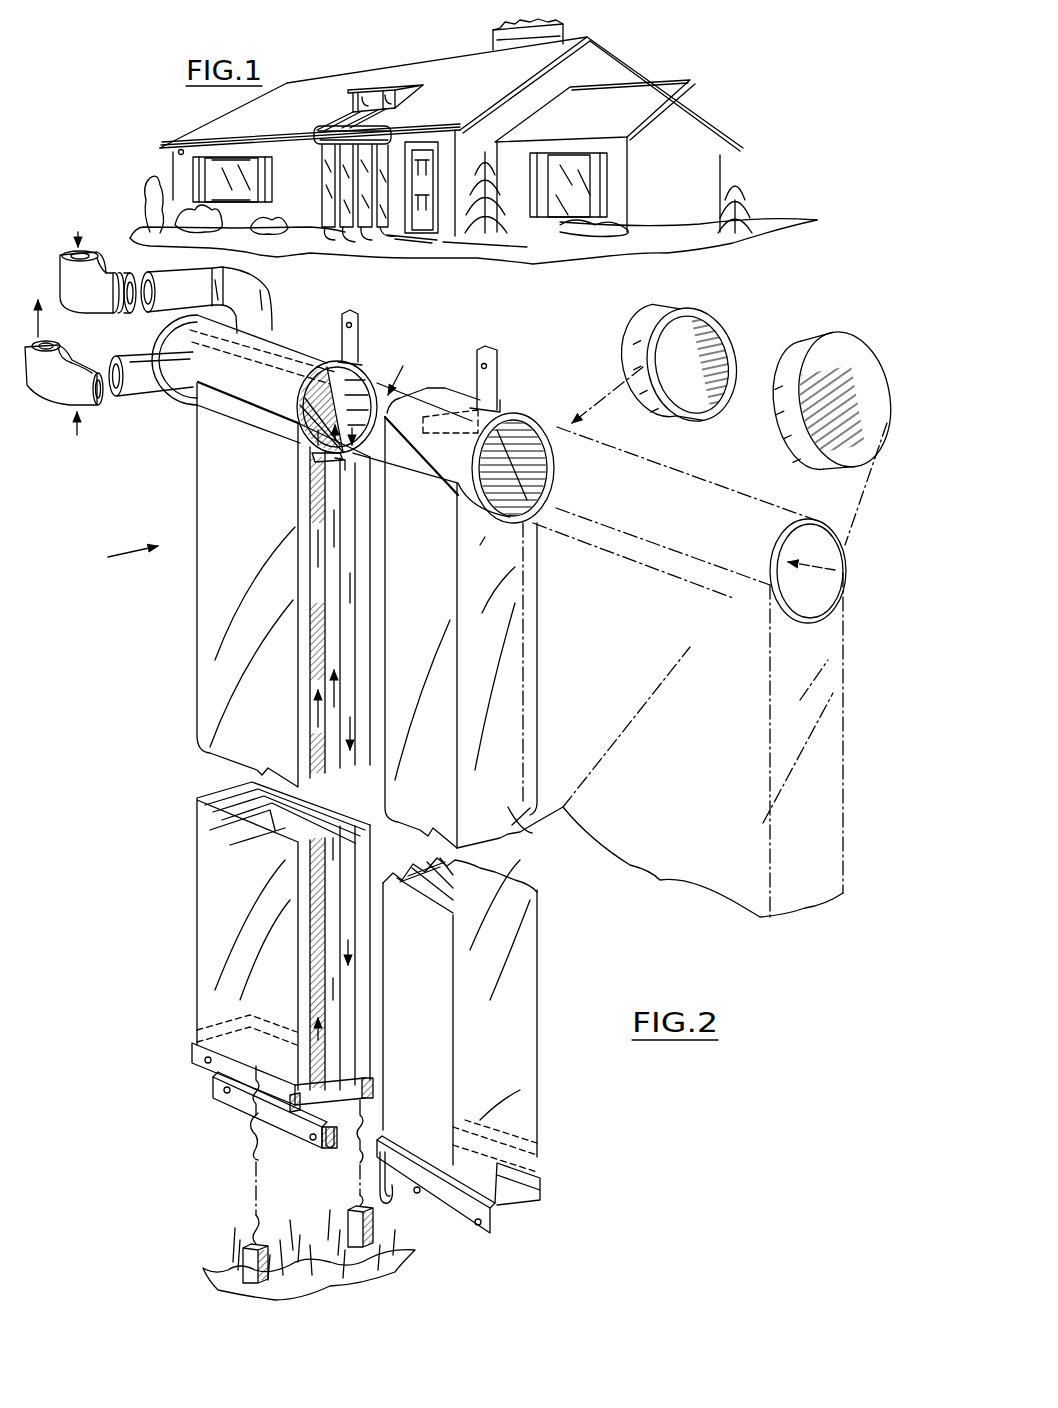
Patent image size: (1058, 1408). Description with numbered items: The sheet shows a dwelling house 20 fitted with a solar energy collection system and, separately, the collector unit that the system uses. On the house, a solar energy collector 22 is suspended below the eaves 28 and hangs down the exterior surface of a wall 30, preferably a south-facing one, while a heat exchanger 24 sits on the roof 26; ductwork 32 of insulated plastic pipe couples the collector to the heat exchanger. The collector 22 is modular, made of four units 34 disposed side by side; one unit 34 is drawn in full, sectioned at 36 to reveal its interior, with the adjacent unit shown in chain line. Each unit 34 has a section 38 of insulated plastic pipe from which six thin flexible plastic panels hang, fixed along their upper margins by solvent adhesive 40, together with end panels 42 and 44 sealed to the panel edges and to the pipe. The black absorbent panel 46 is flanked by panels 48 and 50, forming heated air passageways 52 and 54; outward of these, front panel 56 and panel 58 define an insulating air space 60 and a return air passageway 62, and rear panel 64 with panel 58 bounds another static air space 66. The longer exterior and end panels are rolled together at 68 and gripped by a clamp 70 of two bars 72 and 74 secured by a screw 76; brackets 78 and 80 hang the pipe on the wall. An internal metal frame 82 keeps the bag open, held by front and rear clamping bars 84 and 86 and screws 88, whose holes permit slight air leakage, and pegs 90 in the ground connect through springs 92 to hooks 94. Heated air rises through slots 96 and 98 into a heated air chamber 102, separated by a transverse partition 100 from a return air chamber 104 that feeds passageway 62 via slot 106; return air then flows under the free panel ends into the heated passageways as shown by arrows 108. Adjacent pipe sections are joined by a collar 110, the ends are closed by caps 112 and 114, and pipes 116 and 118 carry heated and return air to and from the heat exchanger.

In FIG. 1, the dwelling house 20 is at (465, 136).
In FIG. 1, the solar energy collector 22 is at (315, 175).
In FIG. 1, the heat exchanger 24 is at (373, 80).
In FIG. 1, the roof 26 is at (445, 97).
In FIG. 1, the eaves 28 is at (190, 148).
In FIG. 1, the wall 30 is at (182, 172).
In FIG. 1, the ductwork 32 is at (345, 108).
In FIG. 1, the collector unit 34 is at (345, 230).
In FIG. 2, the collector unit 34 is at (728, 443).
In FIG. 2, the section 36 is at (331, 416).
In FIG. 2, the pipe section 38 is at (450, 393).
In FIG. 2, the solvent adhesive 40 is at (230, 395).
In FIG. 2, the end panel 42 is at (232, 787).
In FIG. 2, the end panel 44 is at (520, 826).
In FIG. 2, the solar energy absorbent panel 46 is at (312, 482).
In FIG. 2, the panel 48 is at (312, 510).
In FIG. 2, the panel 50 is at (343, 530).
In FIG. 2, the heated air passageway 52 is at (317, 573).
In FIG. 2, the heated air passageway 54 is at (330, 580).
In FIG. 2, the front panel 56 is at (297, 658).
In FIG. 2, the panel 58 is at (357, 612).
In FIG. 2, the air space 60 is at (303, 702).
In FIG. 2, the return air passageway 62 is at (350, 632).
In FIG. 2, the rear panel 64 is at (373, 668).
In FIG. 2, the air space 66 is at (365, 693).
In FIG. 2, the folded/rolled bottom 68 is at (372, 1113).
In FIG. 2, the clamp 70 is at (337, 1120).
In FIG. 2, the bar 72 is at (293, 1132).
In FIG. 2, the bar 74 is at (340, 1160).
In FIG. 2, the screw 76 is at (215, 1088).
In FIG. 2, the bracket 78 is at (340, 318).
In FIG. 2, the bracket 80 is at (505, 368).
In FIG. 2, the internal metal frame 82 is at (217, 1030).
In FIG. 2, the front clamping bar 84 is at (192, 1048).
In FIG. 2, the rear clamping bar 86 is at (368, 1078).
In FIG. 2, the screws 88 is at (258, 1055).
In FIG. 2, the pegs 90 is at (243, 1260).
In FIG. 2, the springs 92 is at (250, 1178).
In FIG. 2, the hooks 94 is at (247, 1133).
In FIG. 2, the longitudinal slot 96 is at (305, 457).
In FIG. 2, the longitudinal slot 98 is at (340, 465).
In FIG. 2, the transverse partition 100 is at (355, 365).
In FIG. 2, the heated air chamber 102 is at (303, 410).
In FIG. 2, the return air chamber 104 is at (398, 405).
In FIG. 2, the slot 106 is at (392, 451).
In FIG. 2, the arrows 108 is at (332, 1098).
In FIG. 2, the collar 110 is at (687, 310).
In FIG. 2, the closure cap 112 is at (813, 350).
In FIG. 2, the closure cap 114 is at (163, 347).
In FIG. 2, the heated air pipe 116 is at (64, 379).
In FIG. 2, the return pipe 118 is at (128, 266).